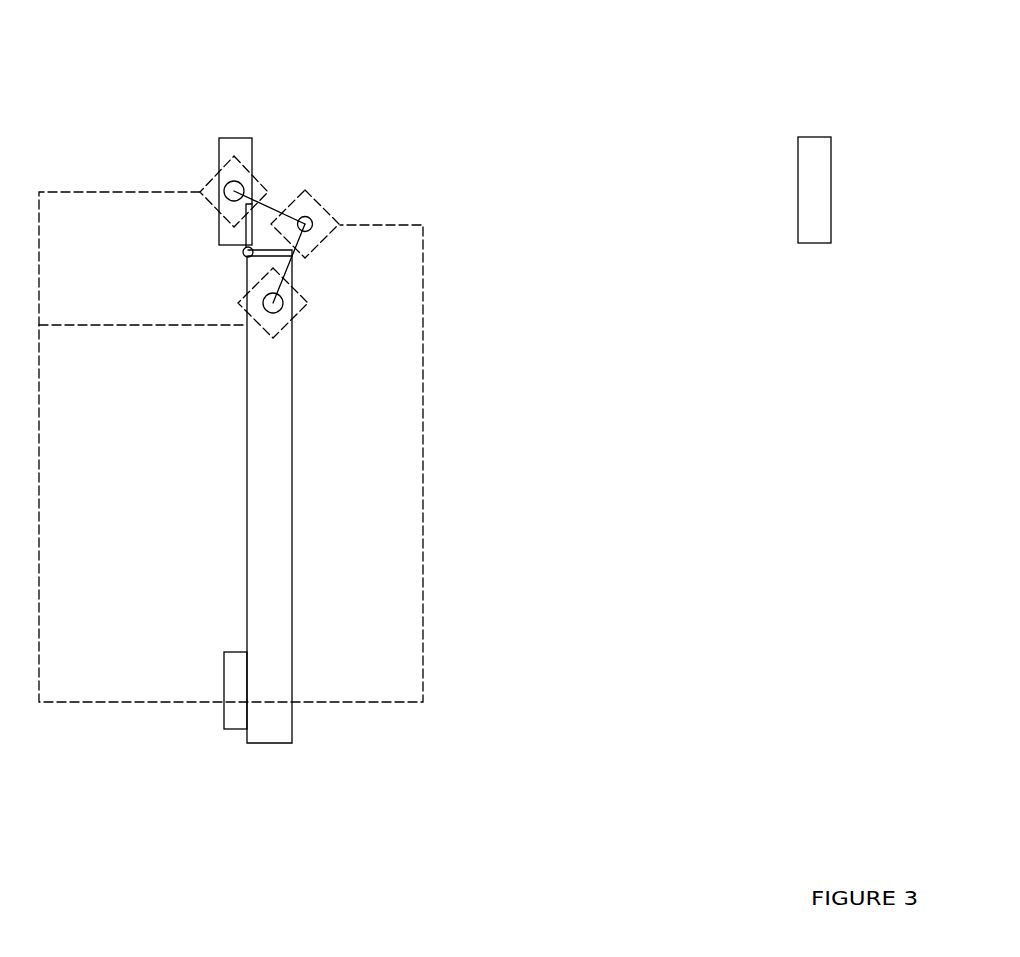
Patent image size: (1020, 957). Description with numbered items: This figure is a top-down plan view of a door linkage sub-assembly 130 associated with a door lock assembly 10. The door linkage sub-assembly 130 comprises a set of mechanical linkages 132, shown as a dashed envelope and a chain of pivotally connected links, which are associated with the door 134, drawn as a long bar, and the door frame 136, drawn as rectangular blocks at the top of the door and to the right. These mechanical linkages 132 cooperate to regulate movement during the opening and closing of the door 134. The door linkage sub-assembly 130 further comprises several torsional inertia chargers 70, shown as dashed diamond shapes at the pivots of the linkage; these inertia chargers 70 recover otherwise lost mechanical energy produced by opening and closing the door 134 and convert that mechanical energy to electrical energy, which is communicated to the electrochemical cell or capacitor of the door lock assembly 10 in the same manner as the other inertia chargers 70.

The door lock assembly 10 is at (224, 717).
The inertia charger 70 is at (221, 186).
The door linkage sub-assembly 130 is at (284, 182).
The mechanical linkages 132 is at (308, 274).
The door 134 is at (270, 498).
The door frame 136 is at (195, 128).